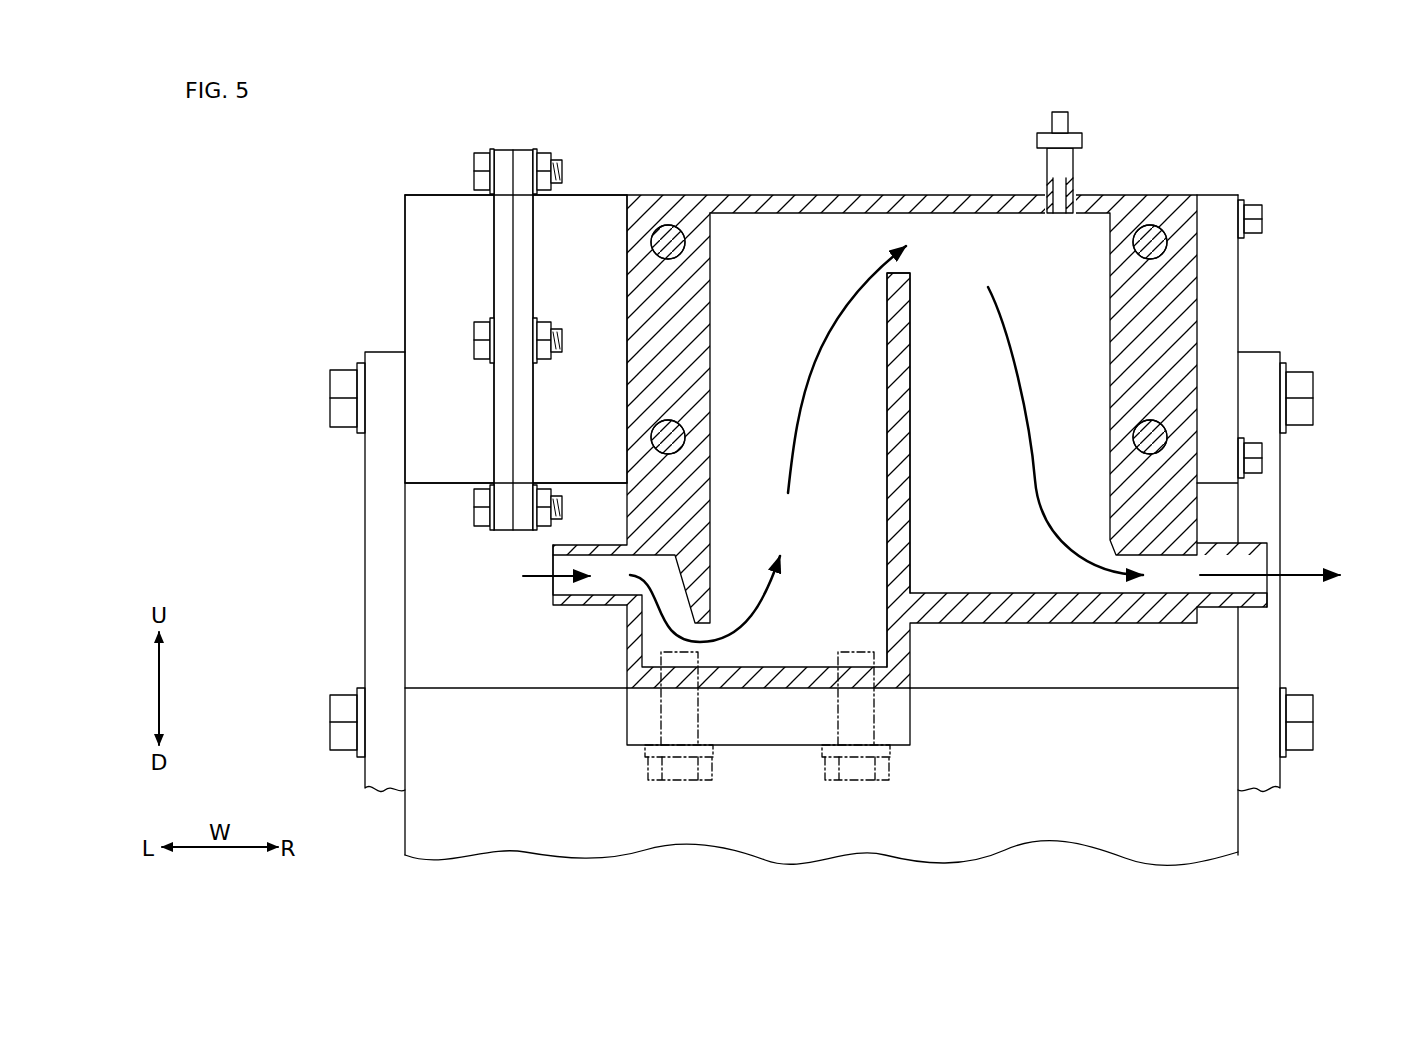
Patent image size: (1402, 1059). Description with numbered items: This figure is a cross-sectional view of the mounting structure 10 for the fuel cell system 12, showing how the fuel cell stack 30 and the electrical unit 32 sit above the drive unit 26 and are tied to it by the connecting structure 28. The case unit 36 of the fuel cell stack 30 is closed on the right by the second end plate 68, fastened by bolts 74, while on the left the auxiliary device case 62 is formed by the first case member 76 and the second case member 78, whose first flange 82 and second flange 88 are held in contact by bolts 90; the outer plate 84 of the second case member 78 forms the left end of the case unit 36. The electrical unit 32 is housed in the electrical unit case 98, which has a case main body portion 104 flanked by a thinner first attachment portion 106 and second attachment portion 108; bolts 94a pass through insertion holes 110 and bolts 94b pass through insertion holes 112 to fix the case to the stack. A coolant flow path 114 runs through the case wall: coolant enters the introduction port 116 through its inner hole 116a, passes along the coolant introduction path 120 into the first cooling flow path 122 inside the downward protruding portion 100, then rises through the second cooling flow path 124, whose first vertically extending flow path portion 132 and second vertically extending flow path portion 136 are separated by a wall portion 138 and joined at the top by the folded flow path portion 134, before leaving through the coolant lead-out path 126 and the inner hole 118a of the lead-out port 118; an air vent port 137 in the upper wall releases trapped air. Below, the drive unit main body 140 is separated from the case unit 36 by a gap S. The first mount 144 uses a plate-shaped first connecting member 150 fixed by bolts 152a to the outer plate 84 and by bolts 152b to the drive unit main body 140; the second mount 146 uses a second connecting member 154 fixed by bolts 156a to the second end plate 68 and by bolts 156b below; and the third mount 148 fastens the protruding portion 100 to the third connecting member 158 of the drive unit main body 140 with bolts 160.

The mounting structure 10 is at (377, 180).
The fuel cell system 12 is at (587, 115).
The drive unit 26 is at (403, 808).
The connecting structure 28 is at (300, 352).
The fuel cell stack 30 is at (596, 191).
The electrical unit 32 is at (696, 191).
The case unit 36 is at (1222, 193).
The auxiliary device case 62 is at (460, 95).
The second end plate 68 is at (1225, 271).
The bolts 74 is at (1252, 218).
The first case member 76 is at (523, 150).
The second case member 78 is at (507, 150).
The first flange 82 is at (525, 272).
The outer plate 84 is at (405, 273).
The second flange 88 is at (505, 240).
The bolts 90 is at (478, 167).
The bolts 94a is at (658, 252).
The bolts 94b is at (1137, 256).
The electrical unit case 98 is at (1100, 193).
The protruding portion 100 is at (898, 656).
The case main body portion 104 is at (797, 203).
The first attachment portion 106 is at (632, 373).
The second attachment portion 108 is at (1182, 312).
The insertion holes 110 is at (650, 241).
The insertion holes 112 is at (1135, 238).
The coolant flow path 114 is at (760, 222).
The introduction port 116 is at (598, 606).
The inner hole 116a is at (560, 585).
The lead-out port 118 is at (1260, 606).
The inner hole 118a is at (1258, 568).
The coolant introduction path 120 is at (672, 556).
The first cooling flow path 122 is at (758, 650).
The second cooling flow path 124 is at (995, 154).
The coolant lead-out path 126 is at (1153, 580).
The first vertically extending flow path portion 132 is at (788, 340).
The folded flow path portion 134 is at (904, 237).
The second vertically extending flow path portion 136 is at (962, 307).
The air vent port 137 is at (1050, 118).
The wall portion 138 is at (903, 458).
The drive unit main body 140 is at (403, 822).
The first mount 144 is at (360, 345).
The second mount 146 is at (1288, 352).
The third mount 148 is at (625, 748).
The first connecting member 150 is at (380, 538).
The bolts 152a is at (338, 385).
The bolts 152b is at (338, 710).
The second connecting member 154 is at (1265, 670).
The bolts 156a is at (1303, 386).
The bolts 156b is at (1303, 718).
The third connecting member 158 is at (898, 718).
The bolts 160 is at (686, 772).
The gap S is at (432, 657).